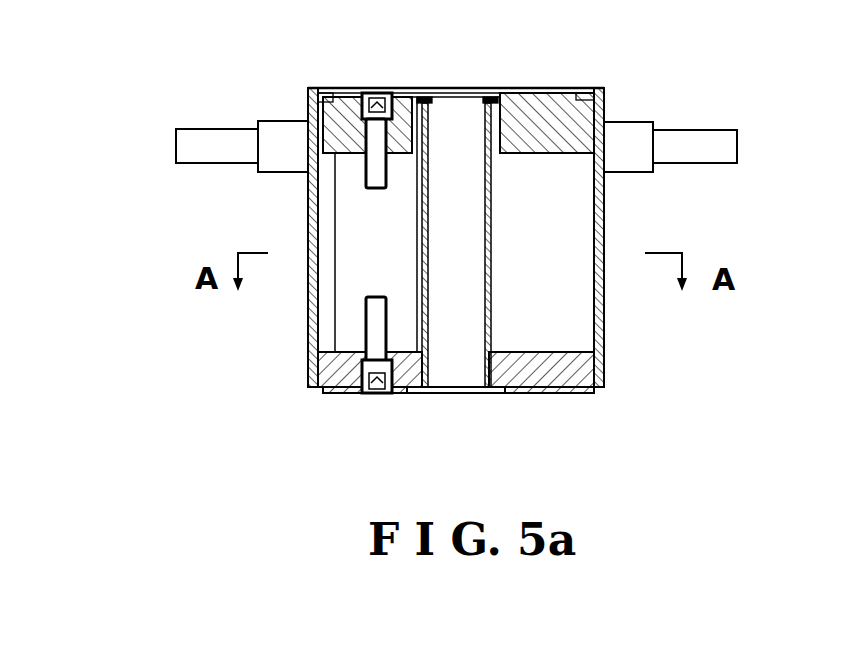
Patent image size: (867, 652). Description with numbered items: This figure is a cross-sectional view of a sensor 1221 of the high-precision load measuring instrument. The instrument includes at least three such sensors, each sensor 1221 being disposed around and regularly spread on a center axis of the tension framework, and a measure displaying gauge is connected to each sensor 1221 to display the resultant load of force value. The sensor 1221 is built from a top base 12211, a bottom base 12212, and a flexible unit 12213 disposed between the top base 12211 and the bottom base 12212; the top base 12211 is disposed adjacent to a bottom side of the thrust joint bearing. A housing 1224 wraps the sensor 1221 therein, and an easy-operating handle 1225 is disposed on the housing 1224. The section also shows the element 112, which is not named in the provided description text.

The housing 1224 is at (597, 227).
The easy-operating handle 1225 is at (680, 140).
The sensor 1221 is at (167, 212).
The top base 12211 is at (345, 128).
The bottom base 12212 is at (337, 350).
The flexible unit 12213 is at (360, 215).
The sleeve 112 is at (448, 125).